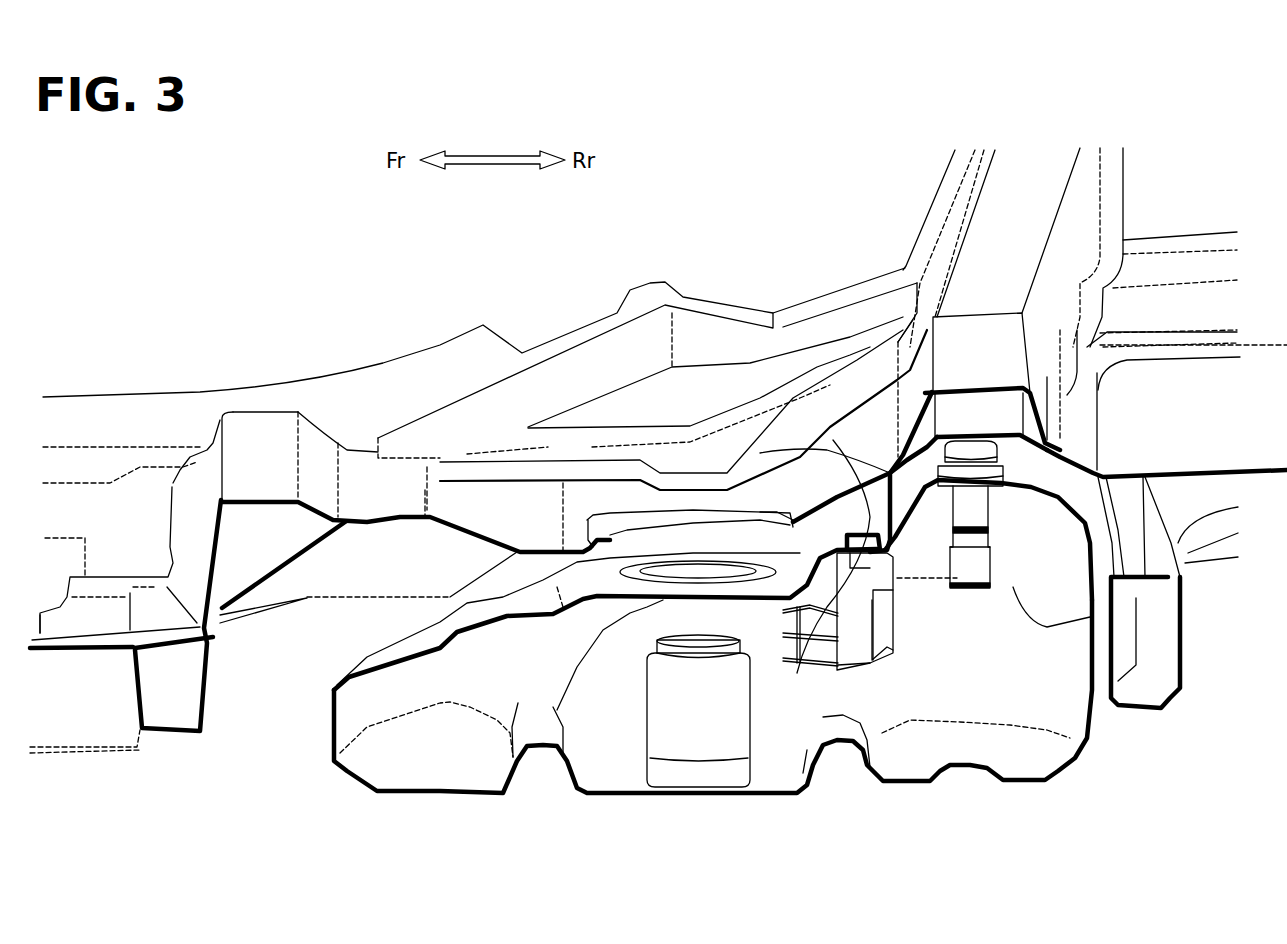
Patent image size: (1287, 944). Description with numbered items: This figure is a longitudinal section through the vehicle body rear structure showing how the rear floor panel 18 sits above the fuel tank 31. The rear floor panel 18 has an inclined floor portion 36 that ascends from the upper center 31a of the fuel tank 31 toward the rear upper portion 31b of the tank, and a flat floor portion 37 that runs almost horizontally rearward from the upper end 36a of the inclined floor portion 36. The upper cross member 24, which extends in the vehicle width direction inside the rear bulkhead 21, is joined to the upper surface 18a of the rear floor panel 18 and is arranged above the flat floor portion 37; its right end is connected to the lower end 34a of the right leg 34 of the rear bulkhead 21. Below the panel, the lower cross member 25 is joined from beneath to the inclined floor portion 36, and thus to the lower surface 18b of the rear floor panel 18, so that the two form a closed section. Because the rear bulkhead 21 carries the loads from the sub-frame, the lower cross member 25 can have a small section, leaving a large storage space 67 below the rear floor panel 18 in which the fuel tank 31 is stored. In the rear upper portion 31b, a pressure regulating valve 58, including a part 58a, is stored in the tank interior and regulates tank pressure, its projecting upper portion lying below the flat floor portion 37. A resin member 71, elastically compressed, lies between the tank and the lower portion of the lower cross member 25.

The rear floor panel 18 is at (485, 497).
The upper surface 18a is at (532, 493).
The lower surface 18b is at (462, 530).
The rear bulkhead 21 is at (950, 148).
The upper cross member 24 is at (1017, 343).
The lower cross member 25 is at (848, 535).
The fuel tank 31 is at (333, 773).
The upper center 31a is at (800, 565).
The rear upper portion 31b is at (1017, 467).
The right leg 34 is at (940, 197).
The lower end 34a is at (960, 313).
The inclined floor portion 36 is at (857, 473).
The upper end 36a is at (917, 415).
The flat floor portion 37 is at (972, 410).
The pressure regulating valve 58 is at (978, 567).
The bolt seat 58a is at (975, 453).
The storage space 67 is at (368, 634).
The resin member 71 is at (845, 585).